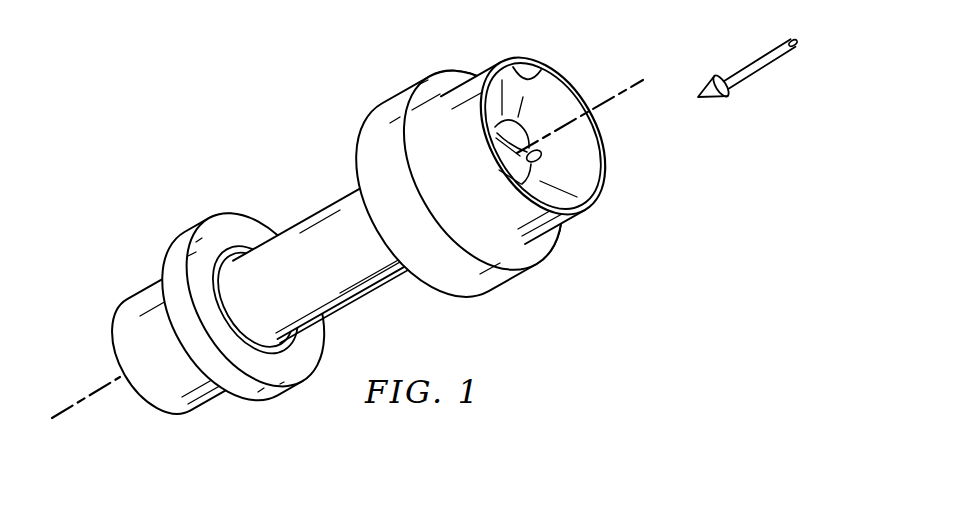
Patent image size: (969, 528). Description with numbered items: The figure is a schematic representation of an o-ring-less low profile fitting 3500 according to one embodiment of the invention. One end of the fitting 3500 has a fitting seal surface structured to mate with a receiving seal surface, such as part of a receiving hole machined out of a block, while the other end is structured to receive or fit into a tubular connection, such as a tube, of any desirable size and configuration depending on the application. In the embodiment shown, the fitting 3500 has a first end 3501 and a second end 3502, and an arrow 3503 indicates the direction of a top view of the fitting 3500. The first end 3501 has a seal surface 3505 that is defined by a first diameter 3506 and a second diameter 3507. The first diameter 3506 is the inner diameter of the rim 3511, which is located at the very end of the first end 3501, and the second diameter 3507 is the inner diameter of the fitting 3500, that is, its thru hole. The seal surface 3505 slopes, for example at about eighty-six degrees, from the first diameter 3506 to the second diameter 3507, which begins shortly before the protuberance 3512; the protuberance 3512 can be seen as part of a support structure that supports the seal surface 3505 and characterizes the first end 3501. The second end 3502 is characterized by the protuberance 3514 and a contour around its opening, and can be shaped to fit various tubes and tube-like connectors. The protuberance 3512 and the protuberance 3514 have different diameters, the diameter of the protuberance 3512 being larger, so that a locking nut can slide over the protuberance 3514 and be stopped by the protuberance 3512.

The fitting 3500 is at (412, 257).
The first end 3501 is at (557, 153).
The second end 3502 is at (193, 429).
The arrow 3503 is at (747, 67).
The seal surface 3505 is at (582, 180).
The first diameter 3506 is at (527, 62).
The second diameter 3507 is at (540, 148).
The rim 3511 is at (563, 82).
The protuberance 3512 is at (378, 85).
The protuberance 3514 is at (180, 212).